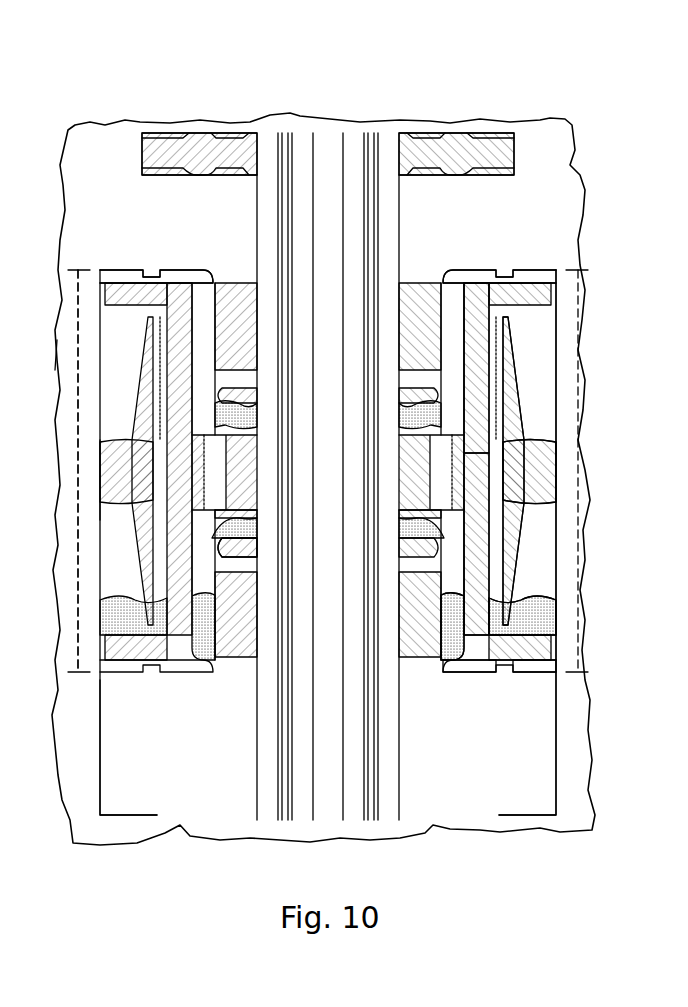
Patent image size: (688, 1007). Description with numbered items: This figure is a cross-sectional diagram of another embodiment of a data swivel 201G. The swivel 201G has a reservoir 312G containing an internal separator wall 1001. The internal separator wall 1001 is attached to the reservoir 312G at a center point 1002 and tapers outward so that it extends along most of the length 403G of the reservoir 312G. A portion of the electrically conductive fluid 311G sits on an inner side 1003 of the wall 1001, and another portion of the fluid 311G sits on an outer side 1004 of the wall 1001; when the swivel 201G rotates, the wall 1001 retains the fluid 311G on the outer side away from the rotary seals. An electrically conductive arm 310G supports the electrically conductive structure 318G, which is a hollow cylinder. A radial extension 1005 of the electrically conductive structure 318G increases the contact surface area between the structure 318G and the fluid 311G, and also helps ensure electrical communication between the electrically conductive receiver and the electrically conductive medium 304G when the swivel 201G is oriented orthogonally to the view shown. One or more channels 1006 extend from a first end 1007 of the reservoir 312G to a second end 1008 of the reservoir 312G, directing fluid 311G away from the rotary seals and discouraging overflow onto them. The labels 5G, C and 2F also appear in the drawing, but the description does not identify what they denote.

The swivel 201G is at (80, 150).
The electrically conductive medium 304G is at (407, 818).
The first end of the reservoir 1007 is at (176, 226).
The second end of the reservoir 1008 is at (491, 226).
The radial extension 1005 is at (522, 288).
The electrically conductive structure 318G is at (478, 333).
The electrically conductive arm 310G is at (472, 457).
The reservoir 312G is at (608, 440).
The center point 1002 is at (550, 483).
The internal separator wall 1001 is at (512, 534).
The electrically conductive fluid 311G is at (540, 620).
The inner side of the wall 1003 is at (446, 686).
The outer side of the wall 1004 is at (531, 689).
The channels 1006 is at (232, 572).
The length of the reservoir 403G is at (64, 515).
The housing foot 5G is at (148, 752).
The housing wall C is at (100, 473).
The border section 2F is at (28, 356).